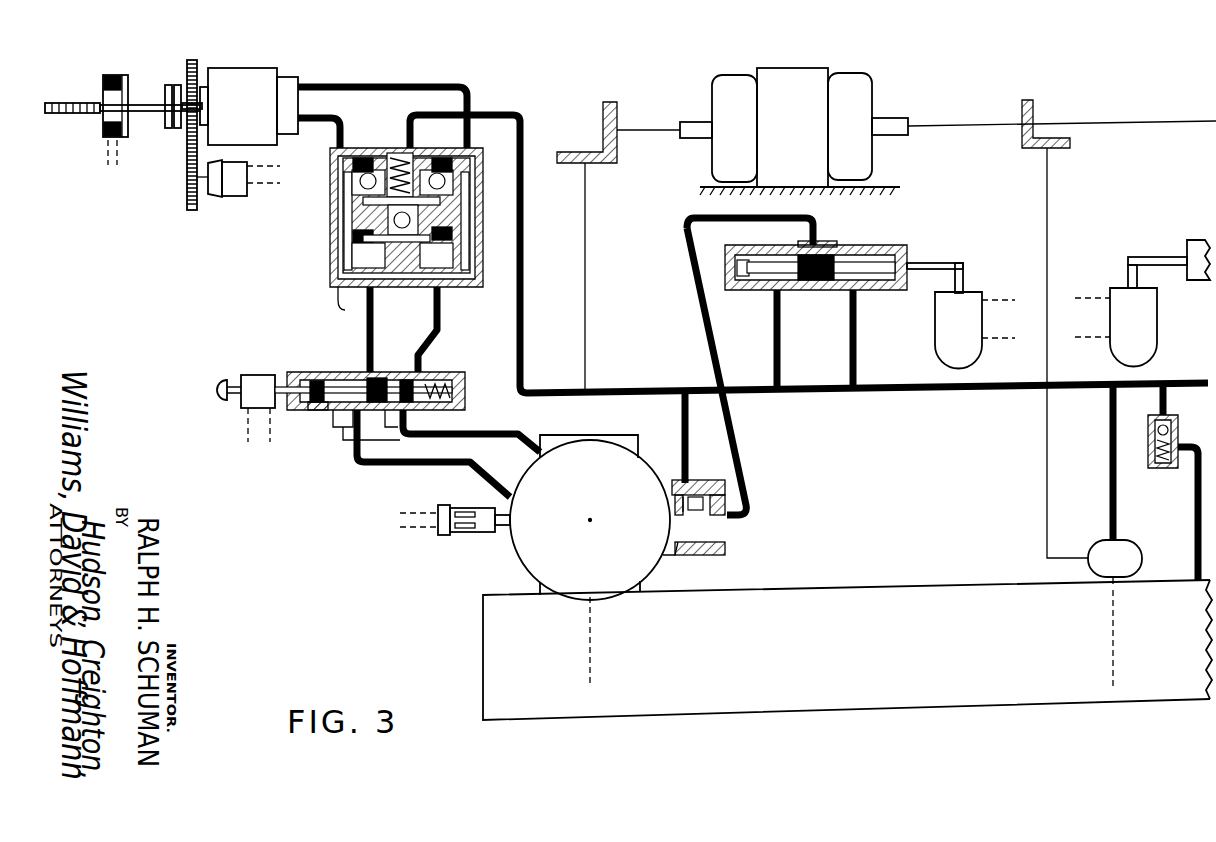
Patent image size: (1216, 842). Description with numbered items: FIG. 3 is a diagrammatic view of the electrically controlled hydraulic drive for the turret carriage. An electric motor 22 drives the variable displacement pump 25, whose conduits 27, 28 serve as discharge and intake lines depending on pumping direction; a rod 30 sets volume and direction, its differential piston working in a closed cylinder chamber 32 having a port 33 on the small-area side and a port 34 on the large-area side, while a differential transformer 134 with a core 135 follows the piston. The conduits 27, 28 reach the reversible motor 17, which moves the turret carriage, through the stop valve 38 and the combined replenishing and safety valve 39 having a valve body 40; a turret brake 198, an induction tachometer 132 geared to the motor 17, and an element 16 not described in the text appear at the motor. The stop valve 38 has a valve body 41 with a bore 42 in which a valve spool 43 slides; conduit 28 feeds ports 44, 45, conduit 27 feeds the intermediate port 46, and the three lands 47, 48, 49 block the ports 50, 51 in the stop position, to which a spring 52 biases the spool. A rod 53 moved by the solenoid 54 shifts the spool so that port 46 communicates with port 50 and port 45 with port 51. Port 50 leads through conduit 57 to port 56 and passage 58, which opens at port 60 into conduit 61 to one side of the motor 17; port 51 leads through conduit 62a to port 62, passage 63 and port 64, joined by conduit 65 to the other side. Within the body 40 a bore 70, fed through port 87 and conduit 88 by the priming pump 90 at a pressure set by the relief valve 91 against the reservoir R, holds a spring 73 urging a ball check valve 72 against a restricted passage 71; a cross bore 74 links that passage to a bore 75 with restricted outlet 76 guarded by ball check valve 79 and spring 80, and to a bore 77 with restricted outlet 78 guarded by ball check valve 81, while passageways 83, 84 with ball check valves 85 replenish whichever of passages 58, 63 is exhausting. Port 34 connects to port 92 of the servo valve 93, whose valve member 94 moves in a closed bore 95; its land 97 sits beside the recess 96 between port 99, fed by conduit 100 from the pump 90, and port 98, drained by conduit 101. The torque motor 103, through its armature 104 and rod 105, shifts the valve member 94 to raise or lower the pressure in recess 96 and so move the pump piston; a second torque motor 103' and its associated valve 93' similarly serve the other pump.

The rack 16 is at (80, 103).
The turret brake 198 is at (120, 75).
The reversible fluid pressure motor 17 is at (254, 68).
The induction tachometer 132 is at (240, 197).
The conduit 61 is at (340, 118).
The conduit 65 is at (467, 90).
The conduit 88 is at (524, 115).
The port 87 is at (400, 153).
The spring 73 is at (390, 156).
The bore 70 is at (412, 155).
The port 64 is at (478, 150).
The port 60 is at (336, 160).
The spring biased ball check valves 85 is at (343, 172).
The passageway 83 is at (360, 183).
The passageway 84 is at (445, 182).
The passage 58 is at (363, 201).
The ball check valve 72 is at (440, 201).
The bore 75 is at (394, 222).
The passage 63 is at (410, 220).
The spring 80 is at (353, 237).
The restricted passage 71 is at (452, 234).
The ball check valve 79 is at (360, 256).
The bore 77 is at (445, 254).
The restricted outlet 76 is at (352, 268).
The restricted outlet 78 is at (453, 265).
The cross bore 74 is at (418, 250).
The combined replenishing and safety valve 39 is at (398, 211).
The valve body 40 is at (346, 305).
The port 56 is at (378, 285).
The ball check valve 81 is at (424, 287).
The port 62 is at (448, 287).
The conduit 62a is at (453, 310).
The conduit 57 is at (374, 320).
The port 51 is at (426, 345).
The solenoid 54 is at (243, 375).
The rod 53 is at (275, 440).
The land 47 is at (385, 387).
The stop valve 38 is at (328, 372).
The valve body 41 is at (338, 380).
The port 50 is at (368, 372).
The land 48 is at (386, 378).
The land 49 is at (428, 372).
The spring 52 is at (455, 375).
The bore 42 is at (465, 389).
The port 44 is at (320, 410).
The valve spool 43 is at (390, 412).
The port 45 is at (412, 410).
The port 46 is at (343, 440).
The conduit 28 is at (526, 432).
The conduit 27 is at (432, 462).
The variable displacement pump 25 is at (640, 558).
The differential transformer 134 is at (445, 506).
The core 135 is at (450, 535).
The rod 30 is at (712, 558).
The cylinder chamber 32 is at (722, 480).
The port 33 is at (680, 480).
The priming pump 90 is at (680, 425).
The port 34 is at (738, 472).
The electric motor 22 is at (797, 88).
The servo valve 93 is at (814, 295).
The port 92 is at (825, 240).
The recess 96 is at (800, 245).
The closed bore 95 is at (745, 255).
The land 97 is at (812, 290).
The port 98 is at (768, 290).
The valve member 94 is at (868, 280).
The port 99 is at (855, 290).
The conduit 101 is at (782, 355).
The conduit 100 is at (858, 368).
The rod 105 is at (920, 263).
The armature 104 is at (965, 270).
The torque motor 103 is at (987, 331).
The cylinder 93' is at (1169, 250).
The torque motor 103' is at (1142, 327).
The pressure relief valve 91 is at (1178, 432).
The reservoir R is at (892, 602).